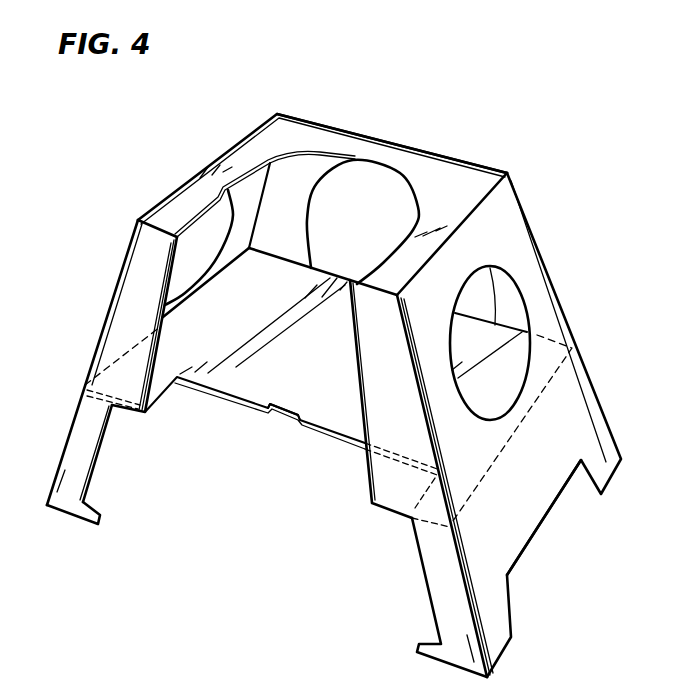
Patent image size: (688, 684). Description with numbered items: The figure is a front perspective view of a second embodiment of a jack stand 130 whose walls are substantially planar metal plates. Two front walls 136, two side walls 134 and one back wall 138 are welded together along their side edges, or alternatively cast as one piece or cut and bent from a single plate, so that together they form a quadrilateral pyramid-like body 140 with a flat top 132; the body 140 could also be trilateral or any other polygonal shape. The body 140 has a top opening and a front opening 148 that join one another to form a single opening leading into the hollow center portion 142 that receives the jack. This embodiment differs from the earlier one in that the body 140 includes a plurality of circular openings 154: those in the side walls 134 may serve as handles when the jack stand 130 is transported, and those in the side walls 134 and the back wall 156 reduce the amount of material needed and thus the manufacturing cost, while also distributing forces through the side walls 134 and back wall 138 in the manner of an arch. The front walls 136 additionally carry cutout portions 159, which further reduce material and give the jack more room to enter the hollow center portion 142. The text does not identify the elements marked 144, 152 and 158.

The jack stand 130 is at (537, 180).
The flat top 132 is at (441, 173).
The side wall 134 is at (543, 323).
The front wall 136 is at (130, 310).
The back wall 138 is at (308, 172).
The body 140 is at (101, 233).
The hollow center portion 142 is at (292, 193).
The rear edge 144 is at (389, 137).
The front opening 148 is at (208, 541).
The side flange 152 is at (554, 552).
The circular opening 154 is at (190, 247).
The back wall 156 is at (237, 388).
The tab 158 is at (313, 430).
The cutout portion 159 is at (100, 457).